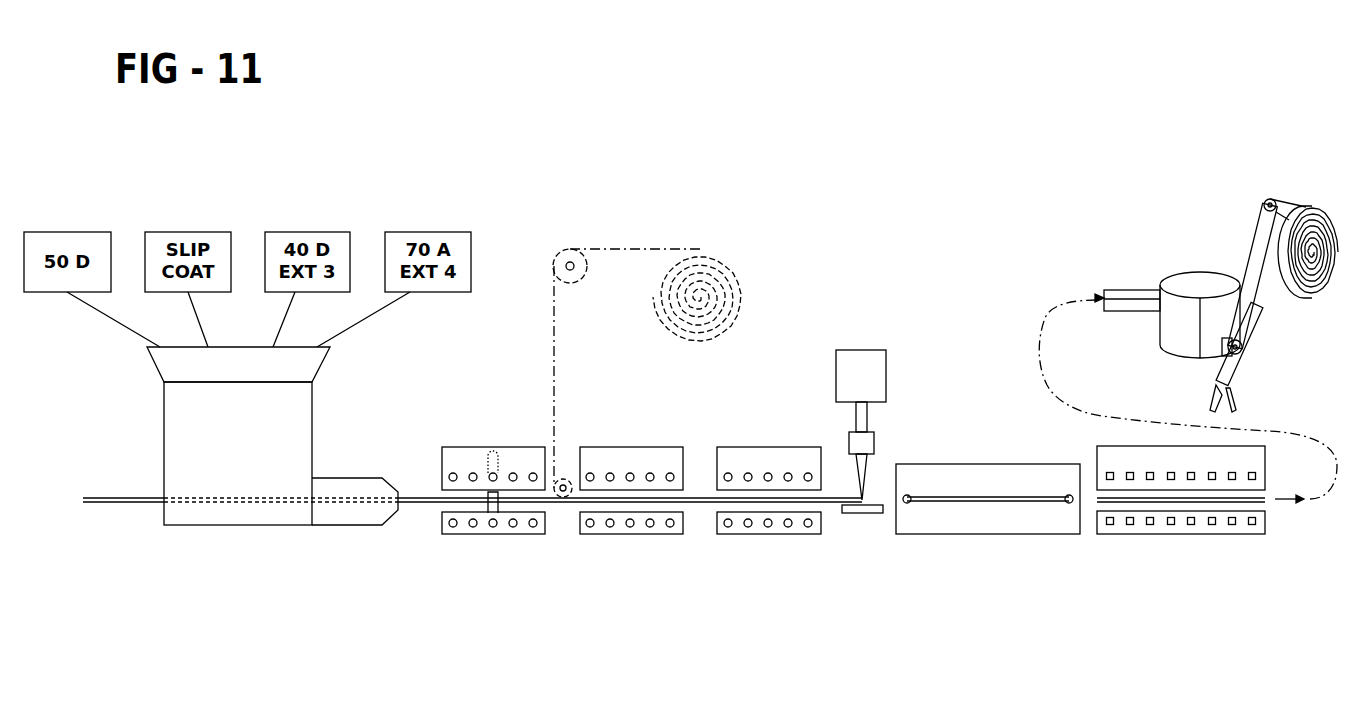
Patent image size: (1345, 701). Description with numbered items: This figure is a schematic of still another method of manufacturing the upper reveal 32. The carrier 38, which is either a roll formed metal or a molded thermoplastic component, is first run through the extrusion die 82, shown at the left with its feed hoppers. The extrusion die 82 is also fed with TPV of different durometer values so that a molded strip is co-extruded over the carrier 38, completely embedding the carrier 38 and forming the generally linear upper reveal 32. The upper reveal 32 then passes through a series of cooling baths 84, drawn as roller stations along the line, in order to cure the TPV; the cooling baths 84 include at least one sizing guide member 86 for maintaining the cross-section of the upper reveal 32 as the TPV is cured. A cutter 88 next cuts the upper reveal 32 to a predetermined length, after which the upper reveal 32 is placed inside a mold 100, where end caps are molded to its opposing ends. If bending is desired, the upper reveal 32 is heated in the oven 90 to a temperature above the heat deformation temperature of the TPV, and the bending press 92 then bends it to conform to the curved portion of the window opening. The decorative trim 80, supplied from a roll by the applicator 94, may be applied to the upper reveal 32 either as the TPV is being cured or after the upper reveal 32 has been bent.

The upper reveal 32 is at (1256, 508).
The carrier 38 is at (112, 503).
The decorative trim 80 is at (554, 379).
The extrusion die 82 is at (312, 430).
The cooling baths 84 is at (487, 535).
The sizing guide member 86 is at (498, 510).
The cutter 88 is at (836, 368).
The oven 90 is at (1162, 534).
The bending press 92 is at (1200, 271).
The applicator 94 is at (587, 268).
The mold 100 is at (983, 534).